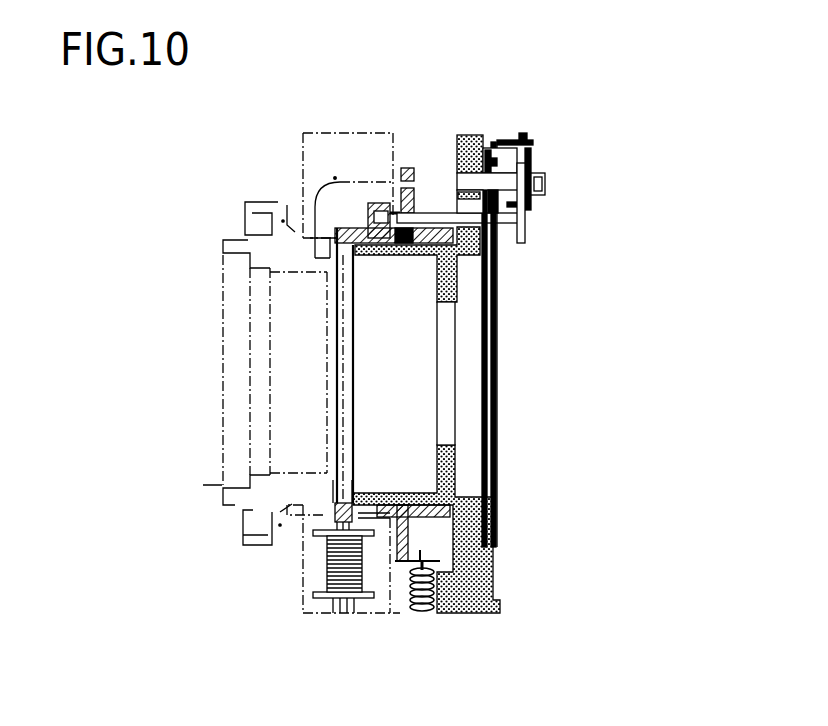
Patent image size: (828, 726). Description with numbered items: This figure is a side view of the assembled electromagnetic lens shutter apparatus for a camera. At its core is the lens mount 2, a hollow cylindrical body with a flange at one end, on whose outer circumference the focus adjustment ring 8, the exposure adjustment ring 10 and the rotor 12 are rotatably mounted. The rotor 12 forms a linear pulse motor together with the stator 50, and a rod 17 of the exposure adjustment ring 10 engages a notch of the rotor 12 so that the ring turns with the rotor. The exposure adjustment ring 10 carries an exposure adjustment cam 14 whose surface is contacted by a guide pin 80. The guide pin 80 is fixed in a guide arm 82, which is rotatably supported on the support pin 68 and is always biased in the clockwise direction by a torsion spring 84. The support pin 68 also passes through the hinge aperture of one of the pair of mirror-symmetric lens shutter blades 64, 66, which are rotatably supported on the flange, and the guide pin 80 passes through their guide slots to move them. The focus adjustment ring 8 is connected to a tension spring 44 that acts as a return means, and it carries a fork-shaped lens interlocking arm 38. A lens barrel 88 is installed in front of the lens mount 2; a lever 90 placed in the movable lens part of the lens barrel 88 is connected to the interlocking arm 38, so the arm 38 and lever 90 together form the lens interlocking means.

The lens mount 2 is at (480, 583).
The focus adjustment ring 8 is at (400, 563).
The exposure adjustment ring 10 is at (405, 205).
The rotor 12 is at (333, 221).
The exposure adjustment cam 14 is at (370, 225).
The rod 17 is at (362, 236).
The lens interlocking arm 38 is at (404, 168).
The tension spring 44 is at (420, 613).
The stator 50 is at (300, 612).
The lens shutter blade 64 is at (486, 415).
The lens shutter blade 66 is at (497, 345).
The support pin 68 is at (507, 178).
The guide pin 80 is at (503, 224).
The guide arm 82 is at (526, 236).
The torsion spring 84 is at (528, 152).
The lens barrel 88 is at (222, 322).
The lever 90 is at (336, 176).